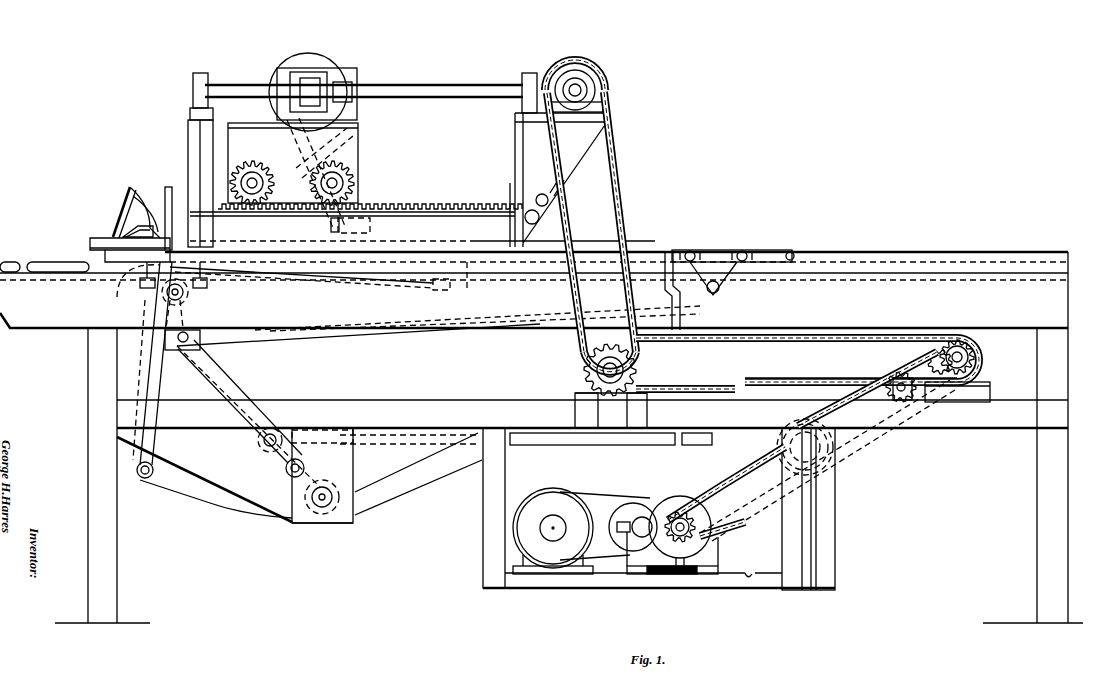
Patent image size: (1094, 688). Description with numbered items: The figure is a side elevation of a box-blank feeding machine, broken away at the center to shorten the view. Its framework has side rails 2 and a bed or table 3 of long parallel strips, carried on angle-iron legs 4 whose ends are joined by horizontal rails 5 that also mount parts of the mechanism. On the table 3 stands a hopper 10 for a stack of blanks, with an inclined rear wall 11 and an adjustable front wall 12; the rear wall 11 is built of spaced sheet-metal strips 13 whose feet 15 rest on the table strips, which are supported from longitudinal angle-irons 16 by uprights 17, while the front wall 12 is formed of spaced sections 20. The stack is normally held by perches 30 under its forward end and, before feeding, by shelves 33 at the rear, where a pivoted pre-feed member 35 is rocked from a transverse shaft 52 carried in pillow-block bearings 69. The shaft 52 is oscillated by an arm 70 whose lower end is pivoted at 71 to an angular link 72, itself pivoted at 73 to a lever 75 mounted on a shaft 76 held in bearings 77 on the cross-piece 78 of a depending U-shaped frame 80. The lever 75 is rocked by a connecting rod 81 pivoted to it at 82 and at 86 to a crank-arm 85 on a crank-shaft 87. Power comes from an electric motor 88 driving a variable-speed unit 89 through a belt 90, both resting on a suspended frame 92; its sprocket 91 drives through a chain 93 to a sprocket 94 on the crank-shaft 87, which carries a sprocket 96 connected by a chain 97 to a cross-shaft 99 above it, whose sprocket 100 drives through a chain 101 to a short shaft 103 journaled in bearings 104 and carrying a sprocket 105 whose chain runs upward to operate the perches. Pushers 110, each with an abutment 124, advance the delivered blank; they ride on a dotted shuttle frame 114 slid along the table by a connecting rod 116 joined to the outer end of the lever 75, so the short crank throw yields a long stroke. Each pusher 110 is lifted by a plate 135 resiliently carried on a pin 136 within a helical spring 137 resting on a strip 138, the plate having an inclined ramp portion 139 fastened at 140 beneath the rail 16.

The side rails 2 is at (480, 330).
The bed or table 3 is at (635, 240).
The angle-iron legs 4 is at (110, 543).
The horizontal rails 5 is at (493, 415).
The hopper 10 is at (186, 178).
The rear wall 11 is at (137, 185).
The front wall 12 is at (290, 152).
The sheet-metal strips 13 is at (128, 190).
The feet 15 is at (104, 238).
The angle-irons 16 is at (795, 250).
The uprights 17 is at (92, 248).
The wall sections 20 is at (312, 170).
The perches 30 is at (330, 228).
The projecting shelves 33 is at (160, 228).
The pivoted rest or member 35 is at (168, 190).
The transverse shaft 52 is at (185, 300).
The pillow-block bearings 69 is at (190, 292).
The arm or lever 70 is at (160, 376).
The pivotal connection 71 is at (142, 477).
The angular link 72 is at (206, 492).
The pivot 73 is at (305, 468).
The lever 75 is at (240, 392).
The shaft 76 is at (325, 492).
The bearings 77 is at (352, 500).
The cross-piece 78 is at (357, 520).
The U-shaped frame 80 is at (278, 522).
The connecting rod 81 is at (413, 442).
The pivotal connection 82 is at (265, 441).
The crank-arm 85 is at (755, 445).
The pivot 86 is at (735, 432).
The crank-shaft 87 is at (815, 455).
The electric motor 88 is at (555, 498).
The variable-speed unit 89 is at (675, 497).
The belt 90 is at (625, 503).
The sprocket 91 is at (672, 535).
The frame 92 is at (483, 560).
The chain 93 is at (728, 528).
The sprocket 94 is at (790, 440).
The sprocket 96 is at (825, 417).
The chain 97 is at (925, 362).
The cross-shaft 99 is at (965, 357).
The sprocket 100 is at (925, 355).
The chain 101 is at (800, 378).
The short shaft 103 is at (600, 370).
The bearings 104 is at (636, 382).
The sprocket 105 is at (637, 350).
The pushers 110 is at (143, 232).
The skeleton frame 114 is at (467, 285).
The connecting rod 116 is at (725, 290).
The abutment 124 is at (152, 228).
The plate 135 is at (130, 278).
The vertical pin or bolt 136 is at (150, 288).
The helical spring 137 is at (138, 285).
The strip 138 is at (142, 290).
The inclined portion 139 is at (258, 277).
The fastening 140 is at (440, 289).